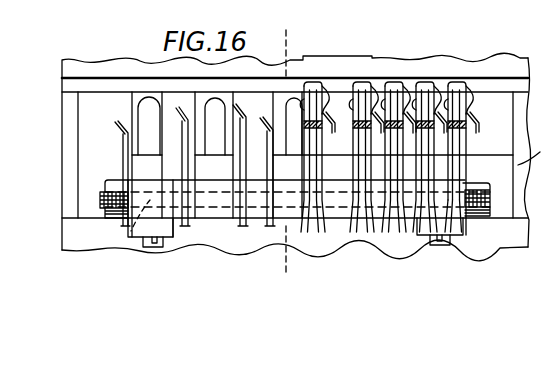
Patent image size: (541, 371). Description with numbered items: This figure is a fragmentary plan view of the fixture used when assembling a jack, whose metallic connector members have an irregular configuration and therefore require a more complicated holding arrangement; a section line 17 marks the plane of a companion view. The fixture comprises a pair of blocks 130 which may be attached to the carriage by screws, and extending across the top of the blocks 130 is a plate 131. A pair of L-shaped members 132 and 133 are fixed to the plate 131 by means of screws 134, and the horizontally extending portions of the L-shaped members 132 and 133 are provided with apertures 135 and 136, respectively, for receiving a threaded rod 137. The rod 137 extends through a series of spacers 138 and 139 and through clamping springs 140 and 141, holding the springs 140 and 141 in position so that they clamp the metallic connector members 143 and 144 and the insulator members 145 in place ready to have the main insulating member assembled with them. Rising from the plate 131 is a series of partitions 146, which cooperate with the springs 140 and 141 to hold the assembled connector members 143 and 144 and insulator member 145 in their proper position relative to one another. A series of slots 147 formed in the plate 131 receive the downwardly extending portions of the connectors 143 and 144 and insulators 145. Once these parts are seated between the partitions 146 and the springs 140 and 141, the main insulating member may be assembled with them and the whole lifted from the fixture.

The section line 17- 17 is at (290, 37).
The blocks 130 is at (64, 124).
The plate 131 is at (500, 210).
The L-shaped member 132 is at (170, 227).
The L-shaped member 133 is at (427, 233).
The screws 134 is at (155, 247).
The aperture 135 is at (130, 232).
The aperture 136 is at (442, 201).
The threaded rod 137 is at (339, 200).
The spacers 138 is at (200, 189).
The spacers 139 is at (249, 181).
The clamping spring 140 is at (332, 94).
The clamping spring 141 is at (344, 110).
The metallic connector member 143 is at (393, 84).
The metallic connector member 144 is at (404, 84).
The insulator member 145 is at (398, 82).
The partitions 146 is at (293, 100).
The slots 147 is at (163, 110).